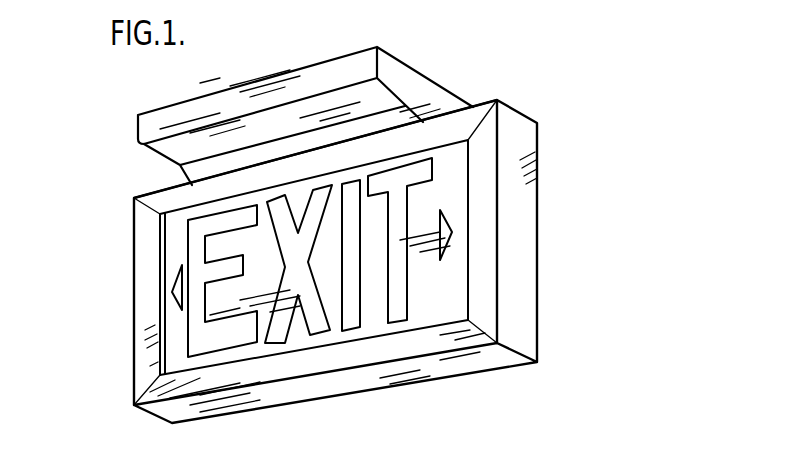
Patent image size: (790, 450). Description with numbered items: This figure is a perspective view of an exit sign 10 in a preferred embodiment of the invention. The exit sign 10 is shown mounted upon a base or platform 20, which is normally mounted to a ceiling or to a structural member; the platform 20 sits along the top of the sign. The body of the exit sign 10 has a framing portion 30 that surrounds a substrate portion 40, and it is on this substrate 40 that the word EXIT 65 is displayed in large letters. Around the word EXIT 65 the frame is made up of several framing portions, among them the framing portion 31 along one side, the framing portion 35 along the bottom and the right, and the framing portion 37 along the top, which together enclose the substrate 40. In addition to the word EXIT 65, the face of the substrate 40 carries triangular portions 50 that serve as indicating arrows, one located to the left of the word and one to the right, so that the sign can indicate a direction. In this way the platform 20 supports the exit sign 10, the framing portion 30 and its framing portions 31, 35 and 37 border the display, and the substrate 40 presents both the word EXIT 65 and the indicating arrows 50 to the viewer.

The exit sign 10 is at (572, 237).
The base or platform 20 is at (437, 85).
The framing portion 30 is at (540, 173).
The framing portion 31 is at (143, 303).
The framing portion 35 is at (330, 386).
The framing portion 37 is at (167, 193).
The substrate portion 40 is at (170, 370).
The triangular portions 50 is at (452, 245).
The word EXIT 65 is at (403, 322).